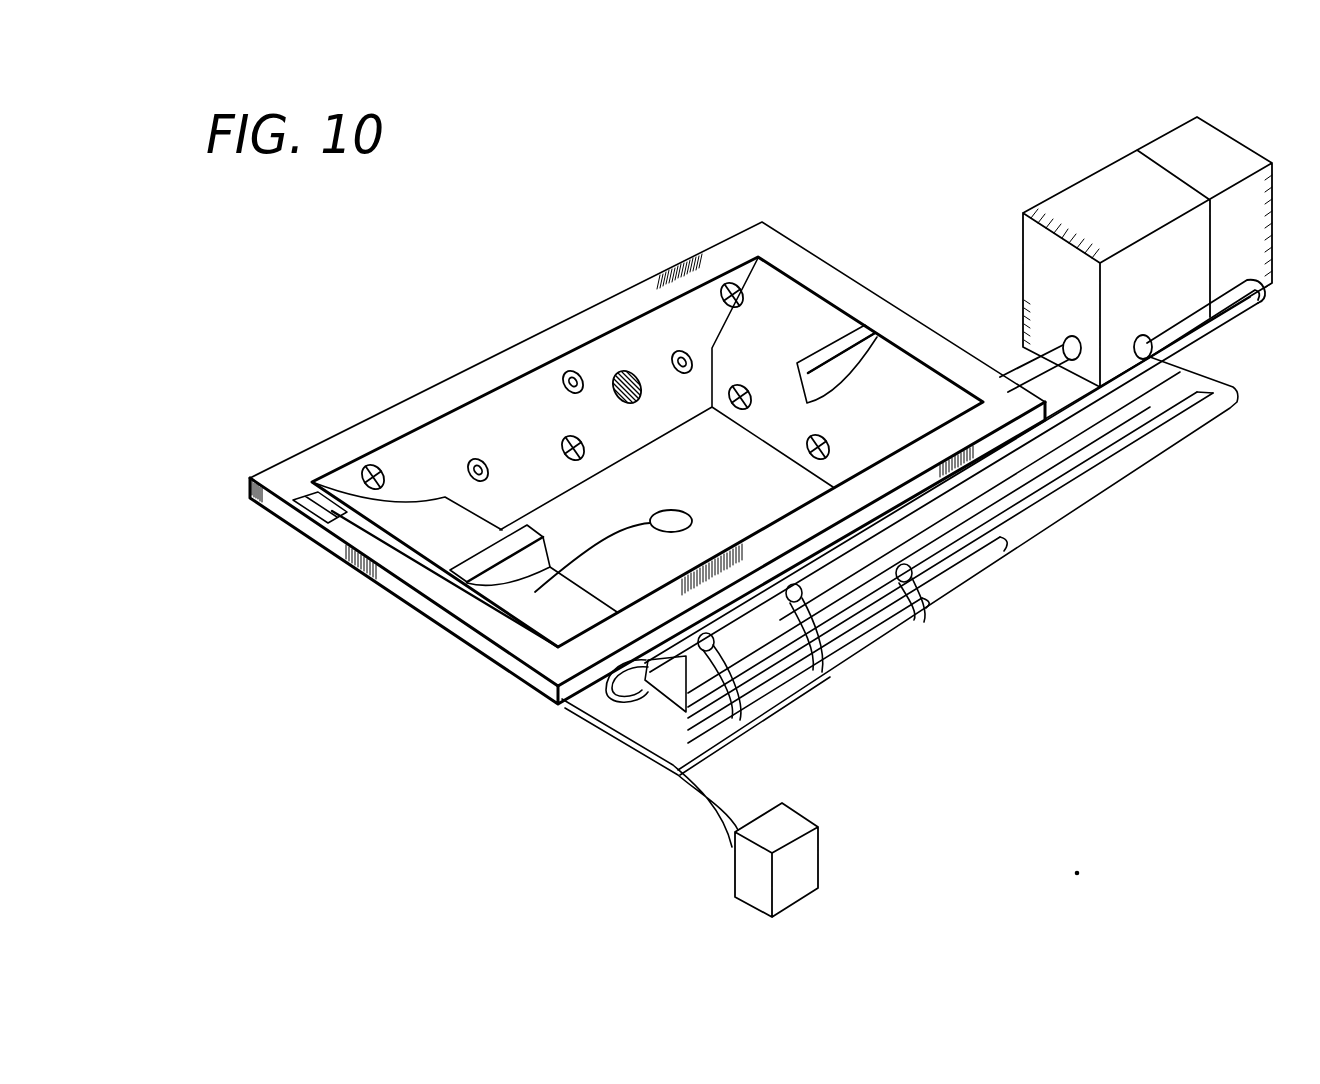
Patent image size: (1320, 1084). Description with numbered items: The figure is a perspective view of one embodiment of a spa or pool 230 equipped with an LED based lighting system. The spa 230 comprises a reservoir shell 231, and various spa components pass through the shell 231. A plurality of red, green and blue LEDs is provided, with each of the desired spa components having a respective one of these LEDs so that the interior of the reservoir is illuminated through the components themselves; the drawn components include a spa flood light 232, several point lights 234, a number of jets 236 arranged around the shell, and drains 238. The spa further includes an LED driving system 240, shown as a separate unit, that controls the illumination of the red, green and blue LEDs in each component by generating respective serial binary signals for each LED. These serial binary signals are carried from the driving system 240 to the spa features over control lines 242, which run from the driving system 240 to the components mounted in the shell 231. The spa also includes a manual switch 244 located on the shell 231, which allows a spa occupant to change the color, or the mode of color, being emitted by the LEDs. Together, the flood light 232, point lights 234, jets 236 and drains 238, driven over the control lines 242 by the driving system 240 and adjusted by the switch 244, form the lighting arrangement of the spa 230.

The spa 230 is at (246, 304).
The reservoir shell 231 is at (284, 474).
The spa flood light 232 is at (627, 370).
The point lights 234 is at (438, 531).
The jets 236 is at (379, 468).
The drains 238 is at (553, 607).
The LED driving system 240 is at (797, 908).
The control lines 242 is at (697, 790).
The manual switch 244 is at (305, 517).